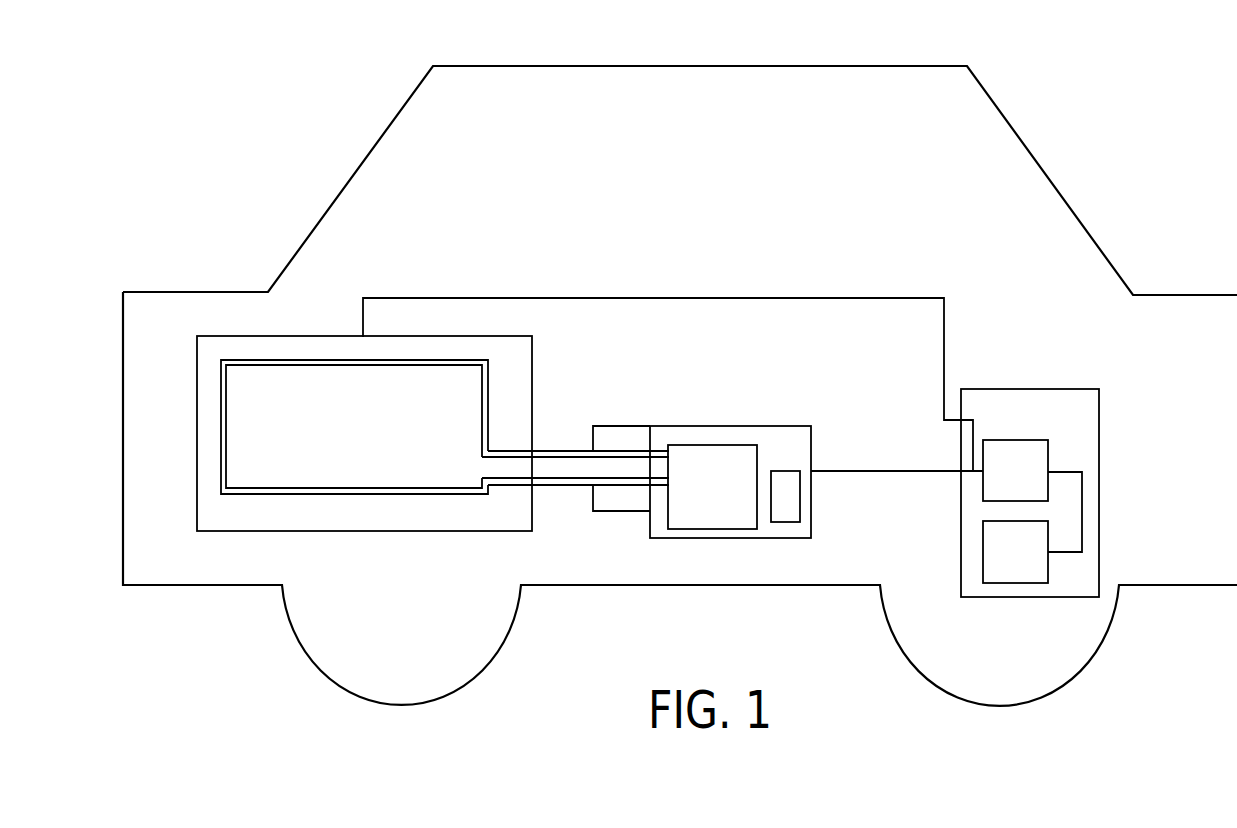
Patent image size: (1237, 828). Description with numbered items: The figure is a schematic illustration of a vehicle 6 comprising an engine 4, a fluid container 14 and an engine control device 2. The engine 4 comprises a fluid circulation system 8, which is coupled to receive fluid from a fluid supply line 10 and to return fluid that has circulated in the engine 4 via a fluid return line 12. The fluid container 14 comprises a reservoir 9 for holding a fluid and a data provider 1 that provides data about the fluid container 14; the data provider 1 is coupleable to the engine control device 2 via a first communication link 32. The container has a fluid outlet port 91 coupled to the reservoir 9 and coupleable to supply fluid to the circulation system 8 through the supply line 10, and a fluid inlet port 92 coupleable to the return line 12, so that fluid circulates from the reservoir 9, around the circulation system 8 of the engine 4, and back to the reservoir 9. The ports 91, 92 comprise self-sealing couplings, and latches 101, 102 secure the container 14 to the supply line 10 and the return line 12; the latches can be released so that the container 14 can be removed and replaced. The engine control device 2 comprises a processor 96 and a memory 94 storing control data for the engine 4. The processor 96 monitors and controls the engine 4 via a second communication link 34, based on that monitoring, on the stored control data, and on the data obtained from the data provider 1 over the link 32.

The vehicle 6 is at (717, 66).
The second communication link 34 is at (797, 298).
The fluid supply line 10 is at (505, 490).
The engine 4 is at (352, 441).
The fluid circulation system 8 is at (283, 488).
The fluid return line 12 is at (510, 449).
The latch 101 is at (622, 435).
The latch 102 is at (620, 502).
The fluid container 14 is at (772, 456).
The fluid inlet port 92 is at (662, 447).
The fluid outlet port 91 is at (660, 486).
The reservoir 9 is at (705, 500).
The data provider 1 is at (779, 509).
The first communication link 32 is at (883, 473).
The engine control device 2 is at (1021, 425).
The processor 96 is at (1001, 485).
The memory 94 is at (1001, 563).